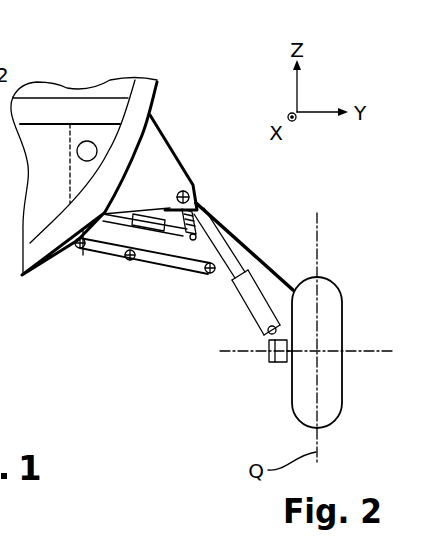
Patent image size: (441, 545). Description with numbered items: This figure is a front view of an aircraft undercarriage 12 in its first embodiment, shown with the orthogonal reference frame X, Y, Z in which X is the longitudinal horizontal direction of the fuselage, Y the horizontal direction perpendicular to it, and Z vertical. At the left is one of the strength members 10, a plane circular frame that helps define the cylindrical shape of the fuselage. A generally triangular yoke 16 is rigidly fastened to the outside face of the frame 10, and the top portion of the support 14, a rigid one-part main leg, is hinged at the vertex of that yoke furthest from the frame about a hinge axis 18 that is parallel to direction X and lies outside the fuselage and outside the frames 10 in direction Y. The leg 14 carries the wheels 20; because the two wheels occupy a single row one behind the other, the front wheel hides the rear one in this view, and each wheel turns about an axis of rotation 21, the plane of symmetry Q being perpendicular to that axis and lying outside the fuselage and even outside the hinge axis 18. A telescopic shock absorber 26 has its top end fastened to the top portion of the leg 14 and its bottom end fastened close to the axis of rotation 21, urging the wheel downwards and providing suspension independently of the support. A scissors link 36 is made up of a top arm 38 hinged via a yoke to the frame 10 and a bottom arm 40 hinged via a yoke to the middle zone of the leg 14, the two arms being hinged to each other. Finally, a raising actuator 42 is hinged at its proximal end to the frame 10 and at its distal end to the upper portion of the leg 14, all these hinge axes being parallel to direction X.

The strength member 10 is at (143, 95).
The undercarriage 12 is at (338, 273).
The support 14 is at (266, 270).
The yoke 16 is at (152, 153).
The axis 18 is at (200, 201).
The wheel 20 is at (326, 310).
The axis of rotation 21 is at (232, 353).
The shock absorber 26 is at (208, 247).
The scissors link 36 is at (133, 265).
The top arm 38 is at (97, 250).
The bottom arm 40 is at (186, 262).
The raising actuator 42 is at (153, 197).